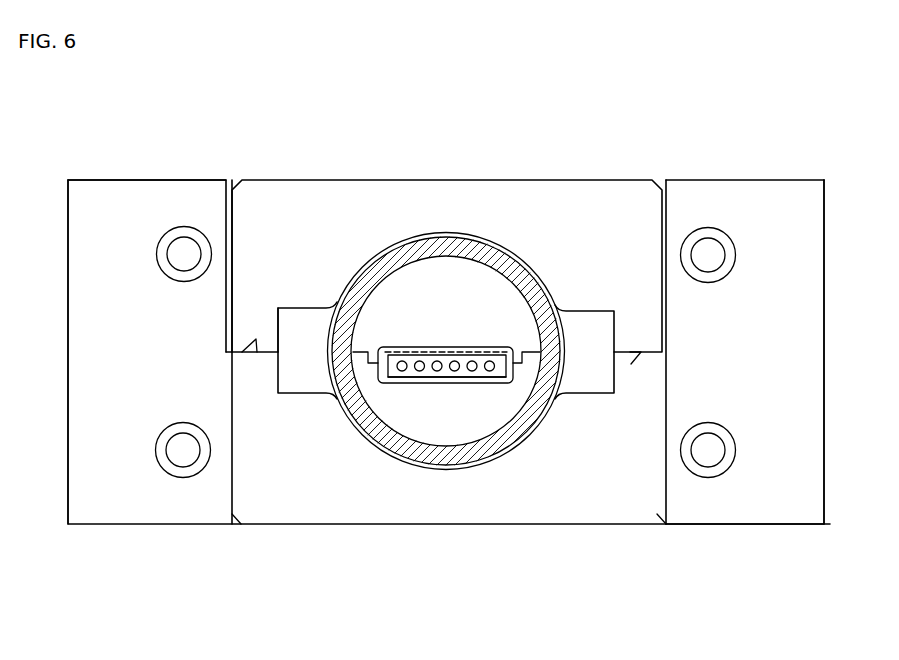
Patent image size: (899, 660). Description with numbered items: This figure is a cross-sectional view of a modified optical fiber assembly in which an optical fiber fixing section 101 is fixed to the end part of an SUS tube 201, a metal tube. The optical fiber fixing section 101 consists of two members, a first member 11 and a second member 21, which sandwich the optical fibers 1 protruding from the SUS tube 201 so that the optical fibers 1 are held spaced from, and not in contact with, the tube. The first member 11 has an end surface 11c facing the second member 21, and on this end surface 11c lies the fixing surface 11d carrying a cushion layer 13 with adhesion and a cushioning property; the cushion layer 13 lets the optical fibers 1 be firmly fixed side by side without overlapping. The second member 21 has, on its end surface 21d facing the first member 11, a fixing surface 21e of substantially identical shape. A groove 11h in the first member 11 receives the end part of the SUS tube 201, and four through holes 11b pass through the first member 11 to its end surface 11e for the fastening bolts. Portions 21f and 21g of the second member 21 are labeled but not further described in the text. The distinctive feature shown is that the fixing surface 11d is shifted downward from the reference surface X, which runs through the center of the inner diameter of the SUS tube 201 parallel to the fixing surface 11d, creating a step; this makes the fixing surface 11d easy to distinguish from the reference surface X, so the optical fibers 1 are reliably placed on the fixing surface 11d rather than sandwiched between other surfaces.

The optical fiber fixing section 101 is at (808, 138).
The optical fibers 1 is at (472, 367).
The first member 11 is at (254, 528).
The through holes 11b is at (166, 243).
The end surface 11c is at (251, 354).
The fixing surface 11d is at (427, 374).
The end surface 11e is at (78, 345).
The groove 11h is at (510, 442).
The cushion layer 13 is at (392, 374).
The SUS tube 201 is at (442, 462).
The second member 21 is at (531, 182).
The end surface 21d is at (631, 363).
The fixing surface 21e is at (432, 358).
The upper surface of slider block 21f is at (302, 192).
The cylindrical bore of slider block 21g is at (515, 268).
The reference surface X is at (447, 351).